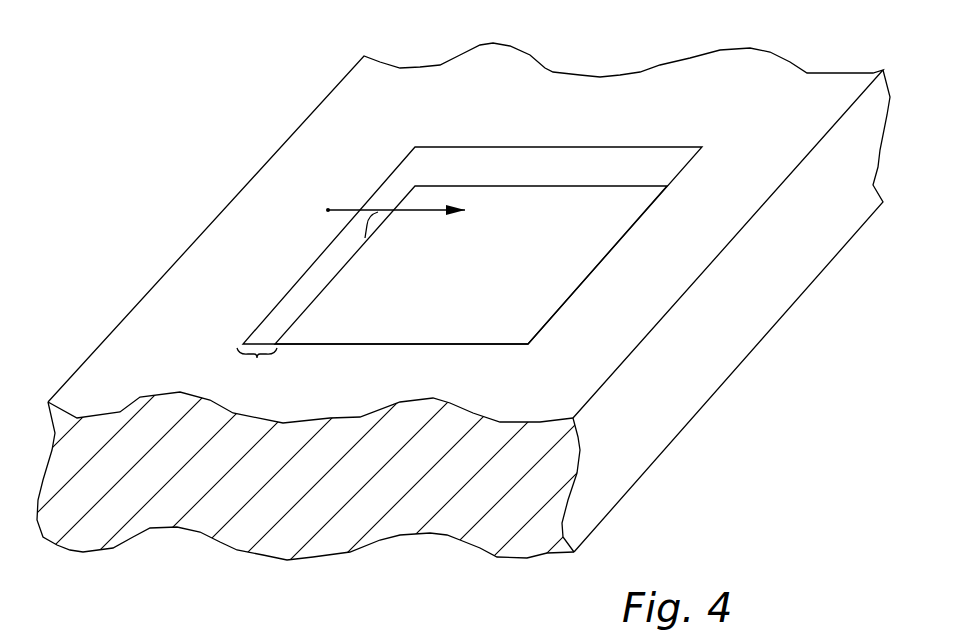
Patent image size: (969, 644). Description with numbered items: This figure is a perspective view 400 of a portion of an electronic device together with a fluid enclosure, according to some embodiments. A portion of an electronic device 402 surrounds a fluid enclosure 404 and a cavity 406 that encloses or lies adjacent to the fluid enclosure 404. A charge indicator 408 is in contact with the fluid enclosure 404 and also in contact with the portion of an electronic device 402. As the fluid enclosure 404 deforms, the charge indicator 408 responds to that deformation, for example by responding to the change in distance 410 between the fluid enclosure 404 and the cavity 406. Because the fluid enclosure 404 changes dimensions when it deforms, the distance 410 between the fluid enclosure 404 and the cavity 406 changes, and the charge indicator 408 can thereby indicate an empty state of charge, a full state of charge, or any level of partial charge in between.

The perspective view 400 is at (173, 164).
The portion of an electronic device 402 is at (752, 348).
The fluid enclosure 404 is at (598, 263).
The cavity 406 is at (540, 158).
The charge indicator 408 is at (328, 210).
The distance 410 is at (254, 369).